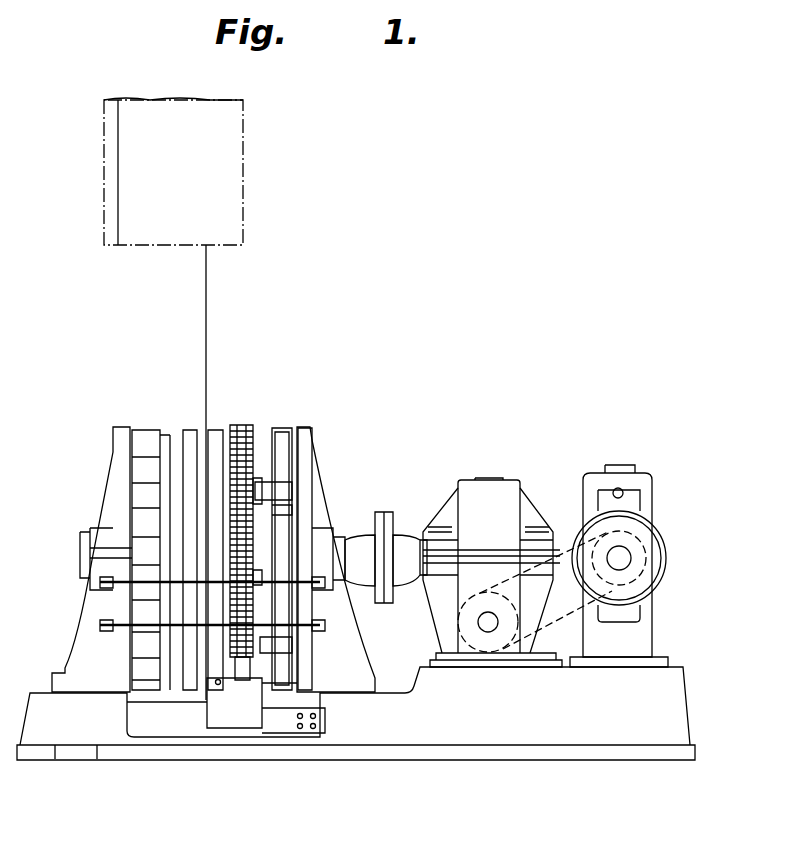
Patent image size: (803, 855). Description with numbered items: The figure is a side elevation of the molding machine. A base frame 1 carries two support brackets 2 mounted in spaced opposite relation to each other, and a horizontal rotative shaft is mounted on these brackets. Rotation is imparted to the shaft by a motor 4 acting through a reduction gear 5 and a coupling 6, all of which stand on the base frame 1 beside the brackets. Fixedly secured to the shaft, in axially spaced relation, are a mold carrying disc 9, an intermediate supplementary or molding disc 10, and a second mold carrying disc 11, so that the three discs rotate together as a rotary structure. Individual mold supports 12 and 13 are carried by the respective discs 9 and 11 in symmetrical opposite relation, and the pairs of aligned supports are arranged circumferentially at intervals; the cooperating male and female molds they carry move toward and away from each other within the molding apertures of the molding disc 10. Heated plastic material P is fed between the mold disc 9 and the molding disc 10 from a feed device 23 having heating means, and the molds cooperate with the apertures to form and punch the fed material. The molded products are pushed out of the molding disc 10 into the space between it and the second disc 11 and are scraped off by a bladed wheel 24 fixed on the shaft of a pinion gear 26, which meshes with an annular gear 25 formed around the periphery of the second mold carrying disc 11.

The base frame 1 is at (385, 733).
The support brackets 2 is at (80, 652).
The motor 4 is at (640, 613).
The reduction gear 5 is at (440, 630).
The coupling 6 is at (393, 512).
The mold carrying disc 9 is at (190, 430).
The supplementary or molding disc 10 is at (218, 430).
The second mold carrying disc 11 is at (278, 432).
The mold support 12 is at (148, 428).
The mold support 13 is at (305, 430).
The feed device 23 is at (233, 182).
The bladed wheel 24 is at (240, 430).
The annular gear 25 is at (250, 577).
The pinion gear 26 is at (252, 485).
The heated plastic material P is at (208, 288).